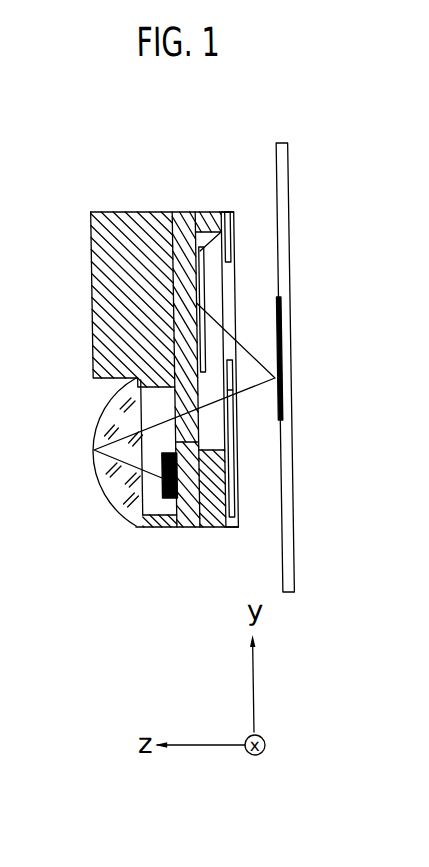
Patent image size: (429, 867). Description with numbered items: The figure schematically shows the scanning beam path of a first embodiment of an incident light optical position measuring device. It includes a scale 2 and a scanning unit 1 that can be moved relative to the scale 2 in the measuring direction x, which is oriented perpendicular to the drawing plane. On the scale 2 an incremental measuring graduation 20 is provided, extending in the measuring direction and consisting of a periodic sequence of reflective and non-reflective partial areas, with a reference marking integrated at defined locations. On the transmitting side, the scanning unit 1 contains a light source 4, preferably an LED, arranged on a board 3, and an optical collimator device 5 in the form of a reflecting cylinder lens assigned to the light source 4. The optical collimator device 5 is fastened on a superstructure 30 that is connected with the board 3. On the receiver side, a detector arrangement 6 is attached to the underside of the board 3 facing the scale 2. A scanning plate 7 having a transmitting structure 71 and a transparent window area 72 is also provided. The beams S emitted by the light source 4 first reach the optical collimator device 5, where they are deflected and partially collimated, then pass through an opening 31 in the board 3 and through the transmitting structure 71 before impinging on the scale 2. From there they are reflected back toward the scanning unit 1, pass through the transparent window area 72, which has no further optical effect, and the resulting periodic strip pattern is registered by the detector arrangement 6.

The scanning unit 1 is at (76, 241).
The scale 2 is at (333, 350).
The incremental measuring graduation 20 is at (281, 327).
The board 3 is at (186, 528).
The superstructure 30 is at (134, 228).
The opening 31 is at (200, 423).
The light source 4 is at (148, 528).
The optical collimator device 5 is at (118, 507).
The detector arrangement 6 is at (223, 213).
The scanning plate 7 is at (293, 400).
The transmitting structure 71 is at (232, 408).
The transparent window area 72 is at (232, 292).
The beams S is at (103, 419).